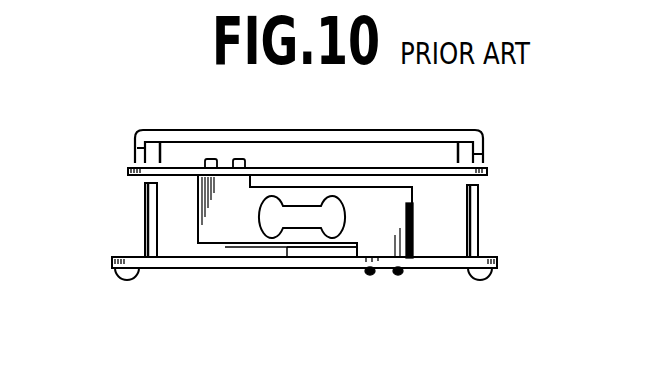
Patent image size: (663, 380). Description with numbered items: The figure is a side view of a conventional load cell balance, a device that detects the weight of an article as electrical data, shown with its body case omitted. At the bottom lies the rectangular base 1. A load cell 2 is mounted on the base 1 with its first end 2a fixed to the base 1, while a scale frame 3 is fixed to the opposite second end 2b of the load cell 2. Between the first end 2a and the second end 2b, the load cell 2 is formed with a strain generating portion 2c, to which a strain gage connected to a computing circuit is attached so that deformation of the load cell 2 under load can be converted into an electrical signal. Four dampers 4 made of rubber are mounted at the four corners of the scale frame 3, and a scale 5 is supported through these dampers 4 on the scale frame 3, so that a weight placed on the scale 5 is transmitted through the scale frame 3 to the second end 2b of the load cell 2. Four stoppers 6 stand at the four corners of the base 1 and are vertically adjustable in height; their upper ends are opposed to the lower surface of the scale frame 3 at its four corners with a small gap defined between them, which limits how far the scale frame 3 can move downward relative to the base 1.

The rectangular base 1 is at (163, 268).
The load cell 2 is at (290, 246).
The first end of the load cell 2a is at (412, 235).
The second end of the load cell 2b is at (225, 188).
The strain generating portion 2c is at (308, 195).
The scale frame 3 is at (418, 170).
The dampers 4 is at (146, 148).
The scale 5 is at (362, 137).
The stoppers 6 is at (150, 218).